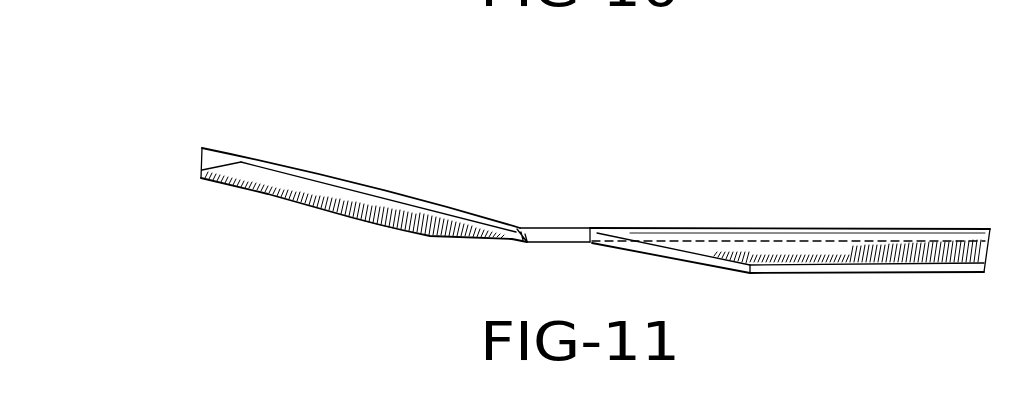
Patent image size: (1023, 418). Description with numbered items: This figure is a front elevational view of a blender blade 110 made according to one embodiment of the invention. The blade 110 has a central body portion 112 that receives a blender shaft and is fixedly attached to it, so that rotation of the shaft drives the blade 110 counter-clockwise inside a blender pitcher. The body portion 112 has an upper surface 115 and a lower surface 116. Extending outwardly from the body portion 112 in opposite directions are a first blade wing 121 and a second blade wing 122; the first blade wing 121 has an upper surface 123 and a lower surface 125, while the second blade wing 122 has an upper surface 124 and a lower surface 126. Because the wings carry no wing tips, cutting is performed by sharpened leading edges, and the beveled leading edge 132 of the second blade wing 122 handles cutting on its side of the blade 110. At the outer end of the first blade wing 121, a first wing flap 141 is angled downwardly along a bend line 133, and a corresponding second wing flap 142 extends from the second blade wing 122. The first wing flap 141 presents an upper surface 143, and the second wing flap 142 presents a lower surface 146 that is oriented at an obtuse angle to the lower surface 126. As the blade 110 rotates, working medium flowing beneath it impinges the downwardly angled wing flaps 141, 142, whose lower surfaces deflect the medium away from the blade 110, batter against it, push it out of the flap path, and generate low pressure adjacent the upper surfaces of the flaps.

The blender blade 110 is at (165, 104).
The body portion 112 is at (549, 215).
The upper surface 115 is at (586, 225).
The lower surface 116 is at (563, 244).
The first blade wing 121 is at (798, 219).
The second blade wing 122 is at (336, 164).
The upper surface 123 is at (883, 227).
The upper surface 124 is at (440, 205).
The lower surface 125 is at (835, 243).
The lower surface 126 is at (368, 198).
The leading edge 132 is at (400, 205).
The bend line 133 is at (951, 227).
The first wing flap 141 is at (793, 272).
The second wing flap 142 is at (298, 219).
The upper surface 143 is at (737, 247).
The lower surface 146 is at (273, 185).